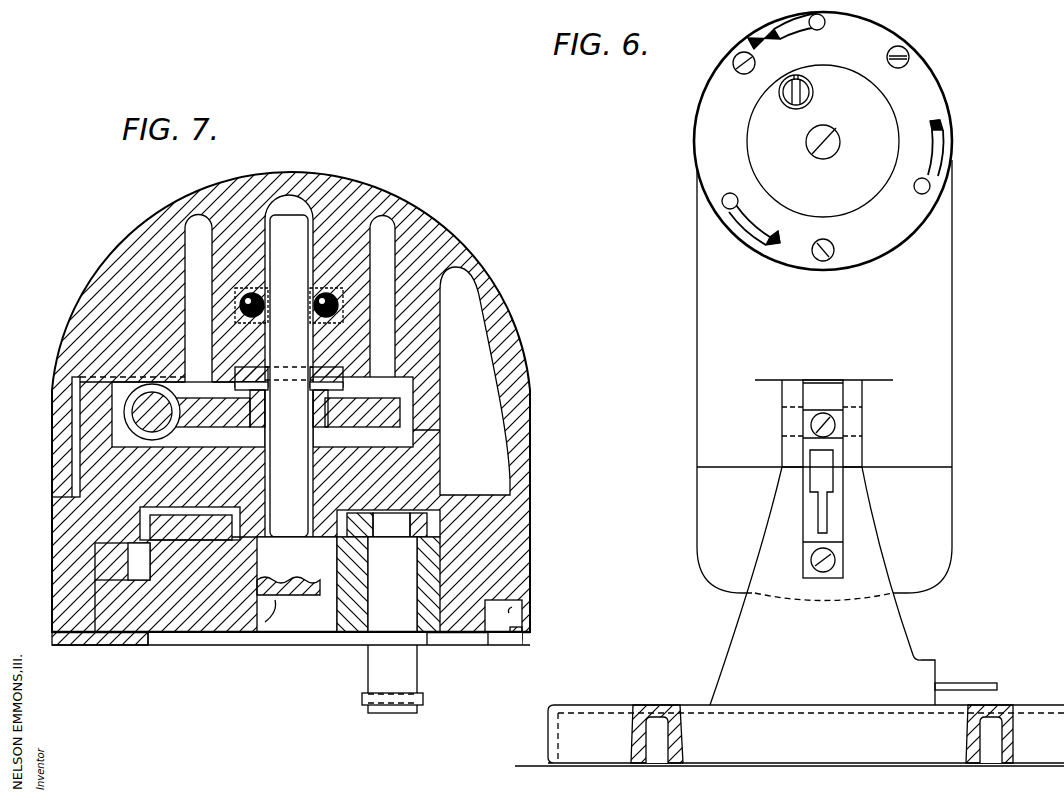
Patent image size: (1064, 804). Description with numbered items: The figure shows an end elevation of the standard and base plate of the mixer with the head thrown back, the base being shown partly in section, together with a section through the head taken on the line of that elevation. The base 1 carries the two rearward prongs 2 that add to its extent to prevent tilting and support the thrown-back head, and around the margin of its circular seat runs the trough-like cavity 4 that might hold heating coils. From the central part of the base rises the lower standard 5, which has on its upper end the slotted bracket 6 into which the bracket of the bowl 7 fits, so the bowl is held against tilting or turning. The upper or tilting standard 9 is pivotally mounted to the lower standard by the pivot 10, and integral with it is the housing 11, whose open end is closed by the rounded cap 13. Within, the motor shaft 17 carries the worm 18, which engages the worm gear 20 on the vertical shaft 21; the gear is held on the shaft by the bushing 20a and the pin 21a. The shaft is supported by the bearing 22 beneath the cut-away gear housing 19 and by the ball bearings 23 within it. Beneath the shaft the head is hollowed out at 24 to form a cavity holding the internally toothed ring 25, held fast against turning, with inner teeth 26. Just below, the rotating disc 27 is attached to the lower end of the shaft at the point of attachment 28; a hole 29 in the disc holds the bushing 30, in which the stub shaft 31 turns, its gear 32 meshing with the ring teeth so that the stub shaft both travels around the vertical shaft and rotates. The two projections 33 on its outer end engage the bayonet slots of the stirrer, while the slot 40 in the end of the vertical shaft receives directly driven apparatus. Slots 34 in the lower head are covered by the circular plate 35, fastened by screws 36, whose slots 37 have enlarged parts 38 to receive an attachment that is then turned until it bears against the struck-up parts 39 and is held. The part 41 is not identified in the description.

In FIG. 6, the base 1 is at (698, 706).
In FIG. 6, the prongs 2 is at (598, 713).
In FIG. 6, the cavity 4 is at (655, 722).
In FIG. 6, the lower standard 5 is at (768, 618).
In FIG. 6, the slotted bracket 6 is at (836, 504).
In FIG. 6, the bowl 7 is at (757, 33).
In FIG. 6, the upper or tilting standard 9 is at (860, 400).
In FIG. 6, the pivot 10 is at (860, 416).
In FIG. 6, the housing 11 is at (717, 74).
In FIG. 6, the cap 13 is at (713, 503).
In FIG. 7, the motor shaft 17 is at (132, 404).
In FIG. 7, the worm 18 is at (125, 421).
In FIG. 7, the gear housing 19 is at (82, 342).
In FIG. 7, the worm gear 20 is at (204, 400).
In FIG. 7, the bushing 20a is at (328, 372).
In FIG. 7, the vertical shaft 21 is at (292, 228).
In FIG. 6, the vertical shaft 21 is at (806, 134).
In FIG. 7, the pin 21a is at (342, 386).
In FIG. 7, the bearing 22 is at (315, 478).
In FIG. 7, the ball bearings 23 is at (252, 320).
In FIG. 7, the hollowed-out cavity 24 is at (448, 536).
In FIG. 7, the internally toothed ring 25 is at (470, 560).
In FIG. 7, the teeth 26 is at (130, 553).
In FIG. 7, the rotating disc 27 is at (193, 598).
In FIG. 7, the point of attachment 28 is at (310, 632).
In FIG. 7, the hole 29 is at (448, 648).
In FIG. 7, the bushing 30 is at (362, 632).
In FIG. 7, the stub shaft 31 is at (402, 605).
In FIG. 7, the gear 32 is at (444, 565).
In FIG. 7, the projections 33 is at (364, 700).
In FIG. 7, the slots 34 is at (512, 612).
In FIG. 7, the circular plate 35 is at (100, 645).
In FIG. 6, the circular plate 35 is at (710, 152).
In FIG. 6, the screws 36 is at (913, 58).
In FIG. 7, the slots 37 is at (500, 648).
In FIG. 6, the slots 37 is at (938, 167).
In FIG. 6, the enlarged parts 38 is at (932, 195).
In FIG. 7, the struck-up parts 39 is at (518, 632).
In FIG. 6, the struck-up parts 39 is at (948, 133).
In FIG. 6, the slot 40 is at (812, 150).
In FIG. 7, the washer 41 is at (270, 630).